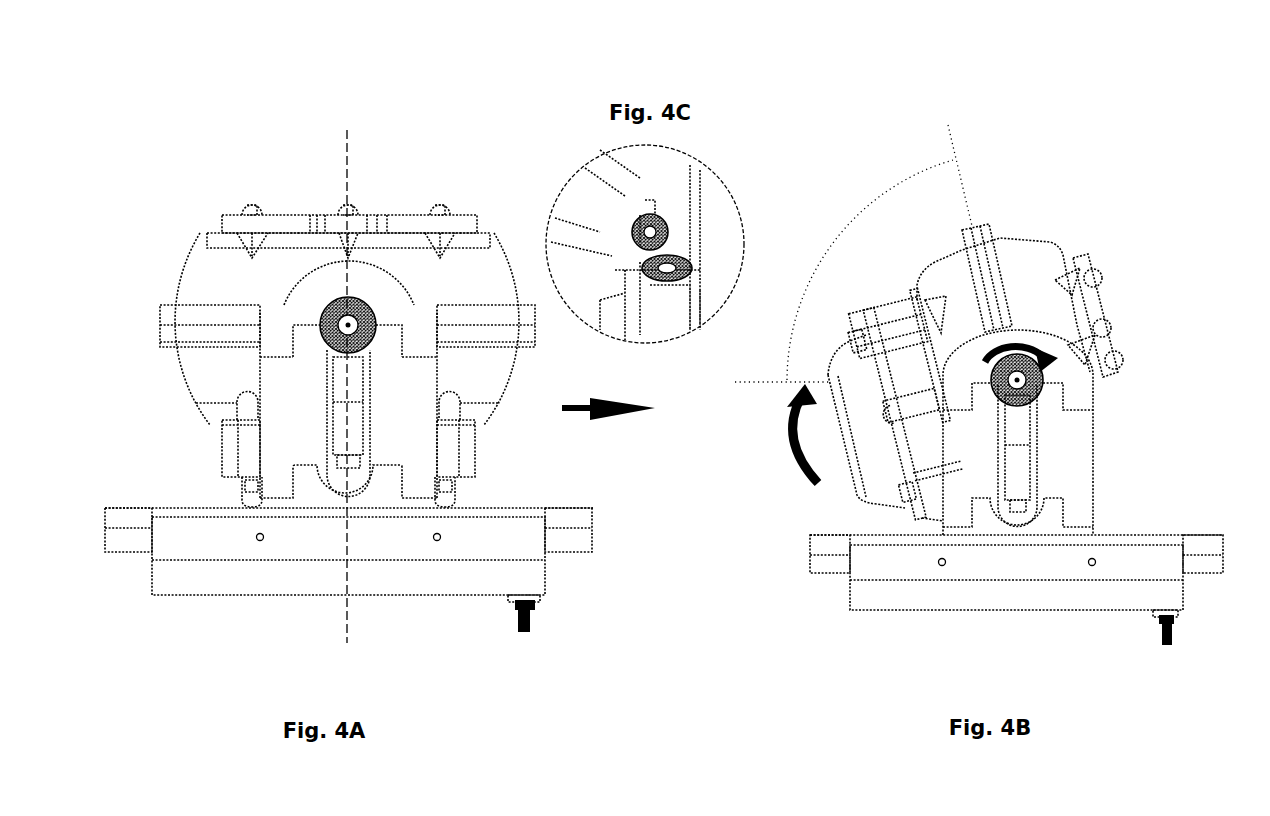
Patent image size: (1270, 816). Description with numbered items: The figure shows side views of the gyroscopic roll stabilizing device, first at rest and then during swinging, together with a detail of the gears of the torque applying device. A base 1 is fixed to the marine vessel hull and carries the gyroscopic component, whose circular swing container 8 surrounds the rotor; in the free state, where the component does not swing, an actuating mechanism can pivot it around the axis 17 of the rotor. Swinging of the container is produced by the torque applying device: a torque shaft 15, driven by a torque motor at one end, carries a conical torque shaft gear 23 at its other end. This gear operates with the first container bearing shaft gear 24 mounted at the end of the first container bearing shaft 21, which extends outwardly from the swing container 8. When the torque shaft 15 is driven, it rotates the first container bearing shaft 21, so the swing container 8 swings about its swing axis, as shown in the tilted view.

In FIG. 4A, the base 1 is at (300, 573).
In FIG. 4B, the base 1 is at (888, 593).
In FIG. 4A, the swing container 8 is at (217, 262).
In FIG. 4A, the torque shaft 15 is at (348, 432).
In FIG. 4B, the torque shaft 15 is at (1022, 465).
In FIG. 4A, the axis 17 is at (347, 165).
In FIG. 4C, the first container bearing shaft 21 is at (653, 232).
In FIG. 4C, the torque shaft gear 23 is at (700, 258).
In FIG. 4C, the first container bearing shaft gear 24 is at (640, 213).